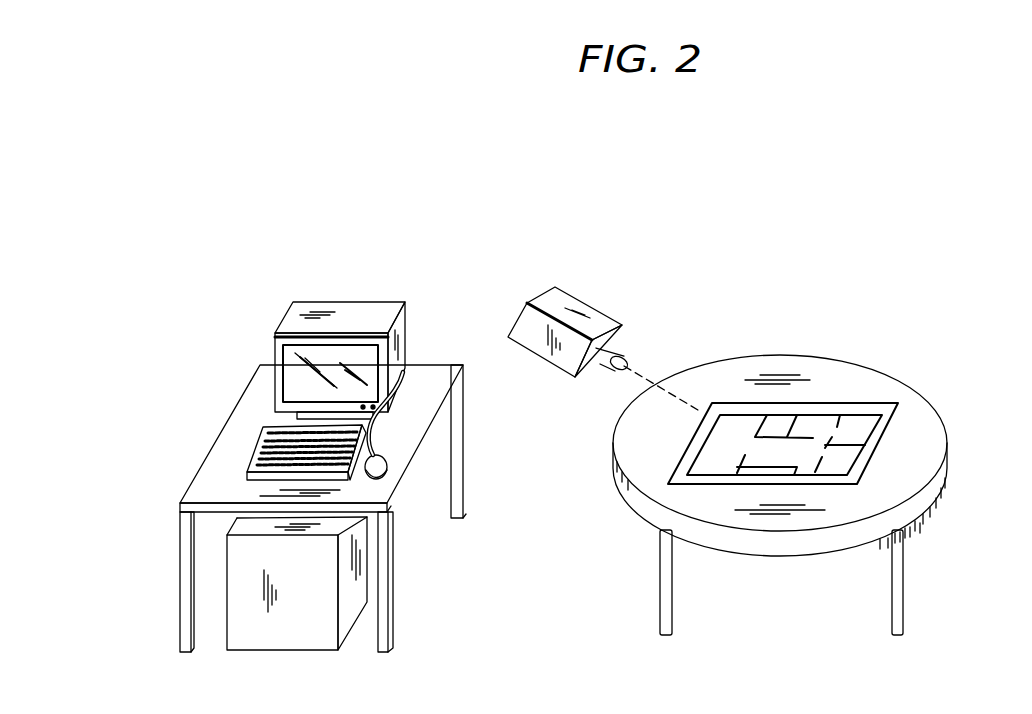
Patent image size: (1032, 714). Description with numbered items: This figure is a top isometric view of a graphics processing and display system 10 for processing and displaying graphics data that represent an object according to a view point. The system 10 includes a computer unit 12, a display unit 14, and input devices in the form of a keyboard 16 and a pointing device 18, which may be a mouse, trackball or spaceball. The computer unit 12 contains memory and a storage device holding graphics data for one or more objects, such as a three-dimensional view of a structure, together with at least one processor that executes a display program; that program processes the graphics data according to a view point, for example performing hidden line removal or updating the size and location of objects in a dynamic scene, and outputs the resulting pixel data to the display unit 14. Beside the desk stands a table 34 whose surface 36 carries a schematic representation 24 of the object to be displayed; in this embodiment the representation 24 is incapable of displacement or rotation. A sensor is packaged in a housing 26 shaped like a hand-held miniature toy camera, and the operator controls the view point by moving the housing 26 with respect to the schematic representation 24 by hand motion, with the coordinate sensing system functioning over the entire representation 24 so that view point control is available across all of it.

The graphics processing and display system 10 is at (266, 288).
The computer unit 12 is at (262, 637).
The display unit 14 is at (352, 311).
The keyboard 16 is at (257, 448).
The pointing device 18 is at (389, 472).
The schematic representation 24 is at (878, 412).
The housing 26 is at (592, 314).
The table 34 is at (920, 520).
The surface 36 is at (925, 432).